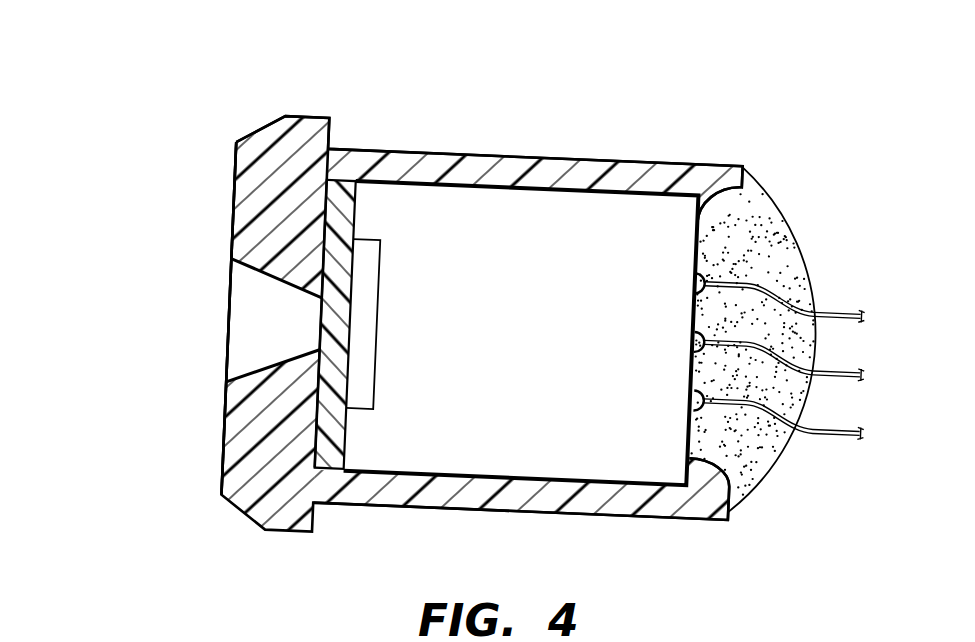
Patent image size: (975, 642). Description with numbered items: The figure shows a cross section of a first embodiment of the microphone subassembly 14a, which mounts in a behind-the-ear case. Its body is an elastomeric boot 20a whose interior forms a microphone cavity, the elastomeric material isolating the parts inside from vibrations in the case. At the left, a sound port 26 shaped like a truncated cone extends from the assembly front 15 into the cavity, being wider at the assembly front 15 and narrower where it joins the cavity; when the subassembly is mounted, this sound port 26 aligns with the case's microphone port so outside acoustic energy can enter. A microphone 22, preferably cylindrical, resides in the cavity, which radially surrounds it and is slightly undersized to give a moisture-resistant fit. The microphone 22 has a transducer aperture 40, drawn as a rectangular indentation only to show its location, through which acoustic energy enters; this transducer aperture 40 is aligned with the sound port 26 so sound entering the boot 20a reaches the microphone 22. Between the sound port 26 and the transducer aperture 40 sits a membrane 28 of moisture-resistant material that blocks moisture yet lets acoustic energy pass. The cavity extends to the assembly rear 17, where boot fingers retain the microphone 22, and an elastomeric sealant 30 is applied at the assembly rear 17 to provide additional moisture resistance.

The microphone subassembly 14a is at (163, 134).
The boot 20a is at (302, 143).
The assembly front 15 is at (233, 203).
The sound port 26 is at (250, 322).
The membrane 28 is at (342, 197).
The transducer aperture 40 is at (363, 322).
The microphone 22 is at (577, 227).
The elastomeric sealant 30 is at (778, 243).
The assembly rear 17 is at (690, 437).